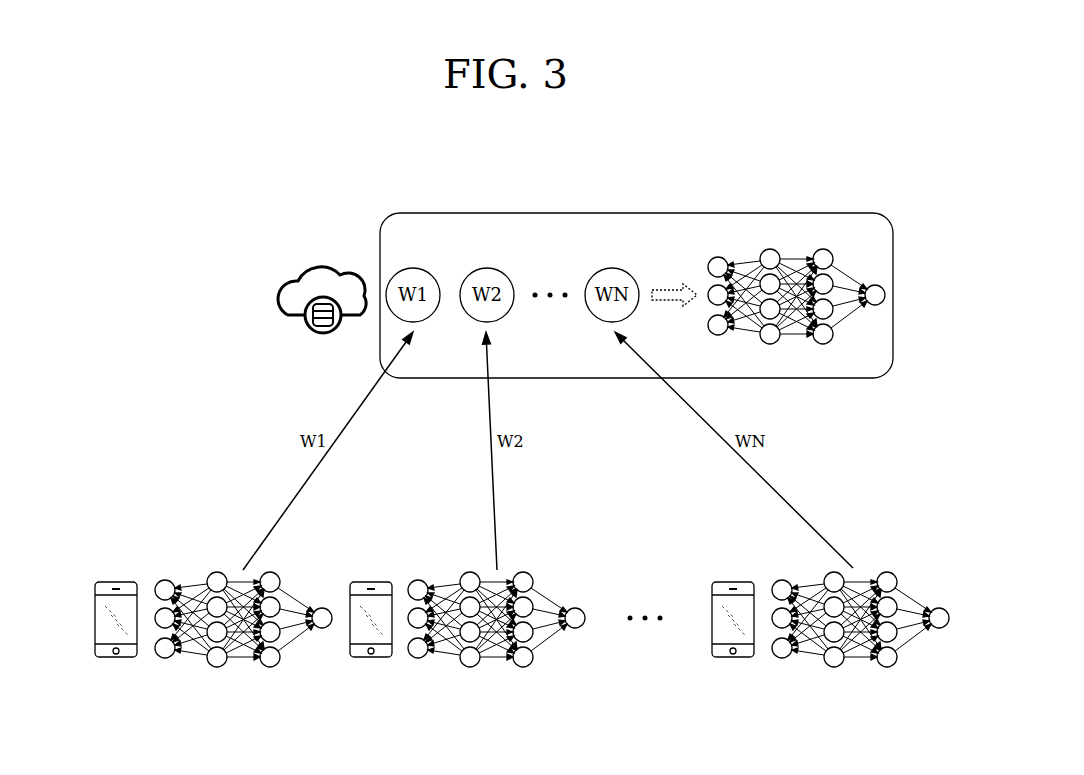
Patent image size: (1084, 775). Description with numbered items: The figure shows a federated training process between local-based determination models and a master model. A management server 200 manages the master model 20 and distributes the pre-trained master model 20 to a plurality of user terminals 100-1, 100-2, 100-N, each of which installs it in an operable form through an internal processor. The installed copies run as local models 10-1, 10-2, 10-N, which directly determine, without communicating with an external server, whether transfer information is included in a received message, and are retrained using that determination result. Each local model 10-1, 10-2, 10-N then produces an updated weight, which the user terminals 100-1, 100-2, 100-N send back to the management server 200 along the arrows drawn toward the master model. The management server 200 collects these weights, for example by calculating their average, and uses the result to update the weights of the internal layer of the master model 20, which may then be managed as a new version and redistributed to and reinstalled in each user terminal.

The management server 200 is at (313, 255).
The master model 20 is at (776, 243).
The user terminal 100-1 is at (117, 582).
The user terminal 100-2 is at (372, 582).
The user terminal 100-N is at (734, 582).
The local model 10-1 is at (217, 572).
The local model 10-2 is at (472, 572).
The local model 10-N is at (885, 572).